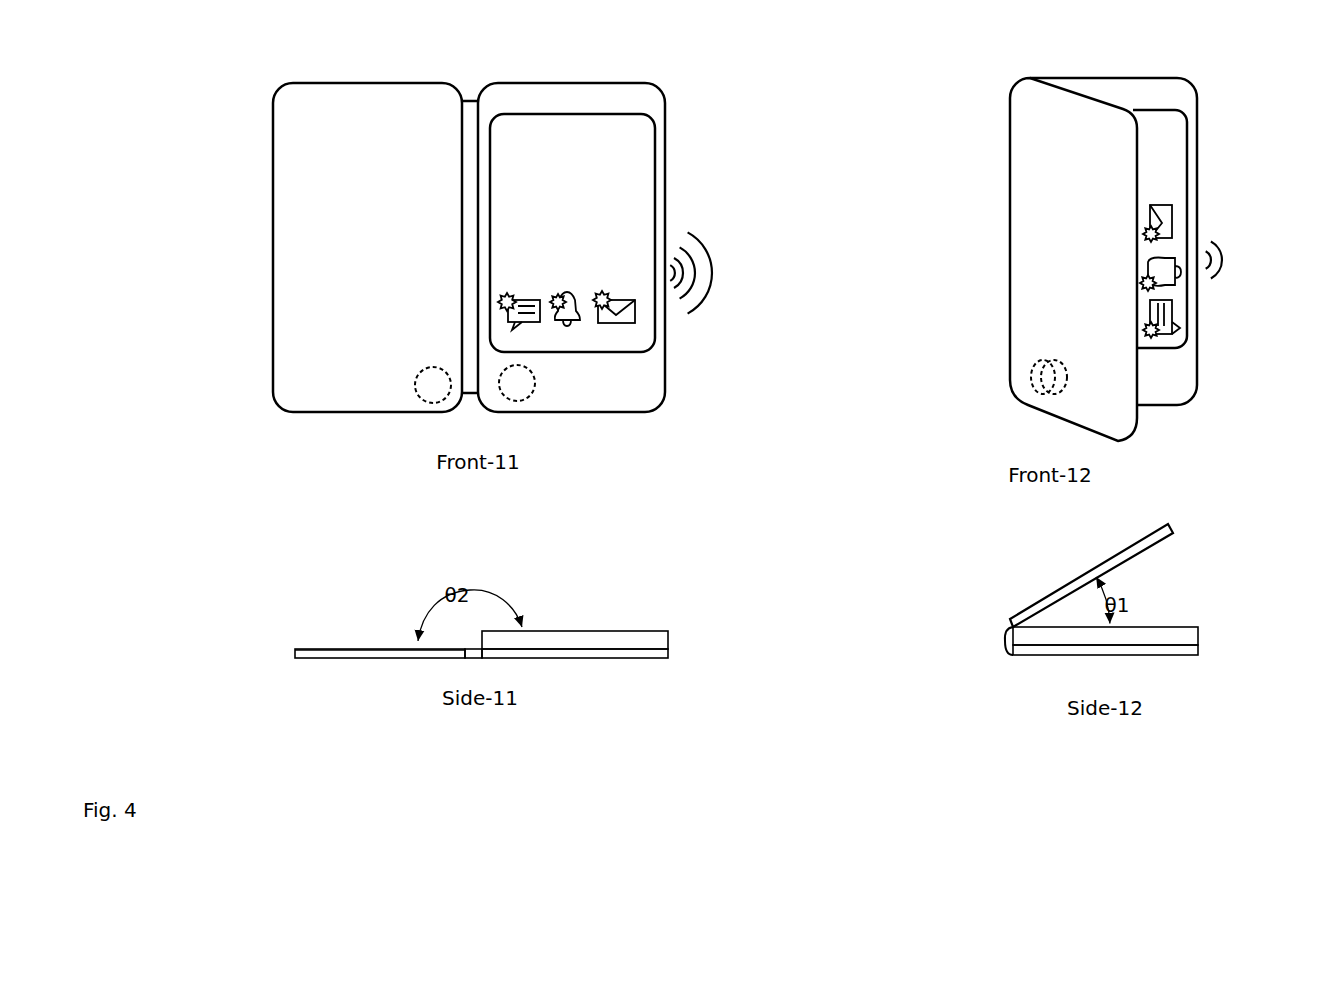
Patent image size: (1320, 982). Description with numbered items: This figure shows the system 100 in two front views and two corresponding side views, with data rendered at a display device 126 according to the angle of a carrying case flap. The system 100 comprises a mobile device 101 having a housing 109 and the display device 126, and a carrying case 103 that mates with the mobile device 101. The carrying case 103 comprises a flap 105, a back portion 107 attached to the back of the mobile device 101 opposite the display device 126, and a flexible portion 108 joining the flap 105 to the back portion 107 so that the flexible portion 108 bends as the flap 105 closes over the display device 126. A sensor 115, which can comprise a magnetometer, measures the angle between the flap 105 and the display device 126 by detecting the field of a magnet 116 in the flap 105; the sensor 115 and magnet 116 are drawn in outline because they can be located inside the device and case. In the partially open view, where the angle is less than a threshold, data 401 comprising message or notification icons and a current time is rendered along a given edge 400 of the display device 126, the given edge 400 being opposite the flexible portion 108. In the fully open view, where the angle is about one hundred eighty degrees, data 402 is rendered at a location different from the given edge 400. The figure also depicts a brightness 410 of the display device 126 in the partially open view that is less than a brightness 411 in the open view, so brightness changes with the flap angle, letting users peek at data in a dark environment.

The system 100 is at (194, 717).
The mobile device 101 is at (661, 393).
The carrying case 103 is at (415, 90).
The flap 105 is at (1072, 587).
The back portion 107 is at (637, 653).
The flexible portion 108 is at (473, 397).
The housing 109 is at (841, 96).
The sensor 115 is at (514, 402).
The magnet 116 is at (427, 403).
The display device 126 is at (1205, 128).
The given edge 400 is at (656, 155).
The data 401 is at (1178, 216).
The data 402 is at (646, 210).
The brightness 410 is at (1222, 262).
The brightness 411 is at (713, 255).